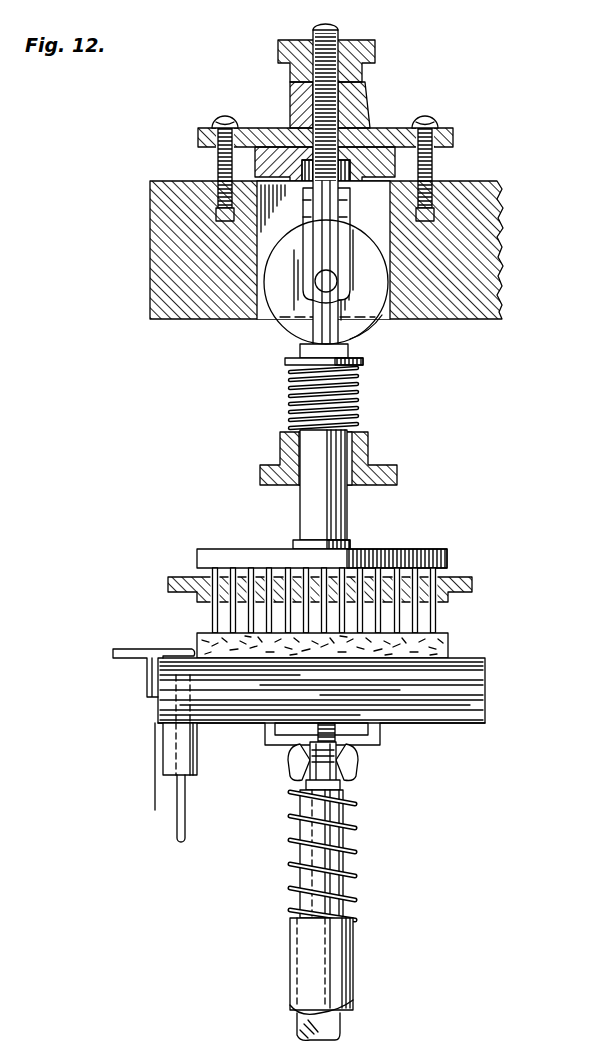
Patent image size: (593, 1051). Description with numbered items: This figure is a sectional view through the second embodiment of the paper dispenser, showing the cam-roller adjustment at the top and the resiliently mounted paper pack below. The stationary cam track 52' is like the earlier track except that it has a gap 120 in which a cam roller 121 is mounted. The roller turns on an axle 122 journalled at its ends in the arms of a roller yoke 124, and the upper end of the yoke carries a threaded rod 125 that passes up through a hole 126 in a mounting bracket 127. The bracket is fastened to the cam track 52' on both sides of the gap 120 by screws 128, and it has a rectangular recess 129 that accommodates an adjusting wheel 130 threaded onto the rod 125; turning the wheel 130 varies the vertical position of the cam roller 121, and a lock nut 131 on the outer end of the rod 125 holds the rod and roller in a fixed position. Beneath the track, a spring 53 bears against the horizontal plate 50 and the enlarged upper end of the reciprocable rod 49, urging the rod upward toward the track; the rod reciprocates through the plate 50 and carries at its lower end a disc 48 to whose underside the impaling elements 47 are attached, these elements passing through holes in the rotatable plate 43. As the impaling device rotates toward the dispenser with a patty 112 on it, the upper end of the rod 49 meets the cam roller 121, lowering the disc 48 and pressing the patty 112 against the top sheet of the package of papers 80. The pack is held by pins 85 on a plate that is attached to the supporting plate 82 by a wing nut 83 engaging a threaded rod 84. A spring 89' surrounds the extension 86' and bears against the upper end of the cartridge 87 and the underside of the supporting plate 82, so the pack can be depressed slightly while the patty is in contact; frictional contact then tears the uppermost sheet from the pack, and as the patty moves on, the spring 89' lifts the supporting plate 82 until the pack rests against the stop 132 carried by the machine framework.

The threaded rod 125 is at (321, 28).
The lock nut 131 is at (373, 55).
The hole 126 is at (300, 92).
The mounting bracket 127 is at (360, 105).
The rectangular recess 129 is at (255, 155).
The adjusting wheel 130 is at (375, 150).
The screws 128 is at (216, 123).
The cam track 52' is at (300, 250).
The roller yoke 124 is at (342, 208).
The gap 120 is at (386, 306).
The cam roller 121 is at (366, 346).
The axle 122 is at (317, 292).
The spring 53 is at (293, 400).
The horizontal plate 50 is at (280, 448).
The reciprocable rod 49 is at (305, 505).
The disc 48 is at (238, 556).
The rotatable plate 43 is at (458, 578).
The impaling elements 47 is at (221, 620).
The patty 112 is at (449, 650).
The package of papers 80 is at (478, 691).
The stop 132 is at (130, 648).
The supporting plate 82 is at (236, 723).
The pins 85 is at (180, 825).
The wing nut 83 is at (290, 770).
The threaded rod 84 is at (306, 789).
The extension 86' is at (299, 856).
The spring 89' is at (293, 854).
The cartridge 87 is at (310, 964).